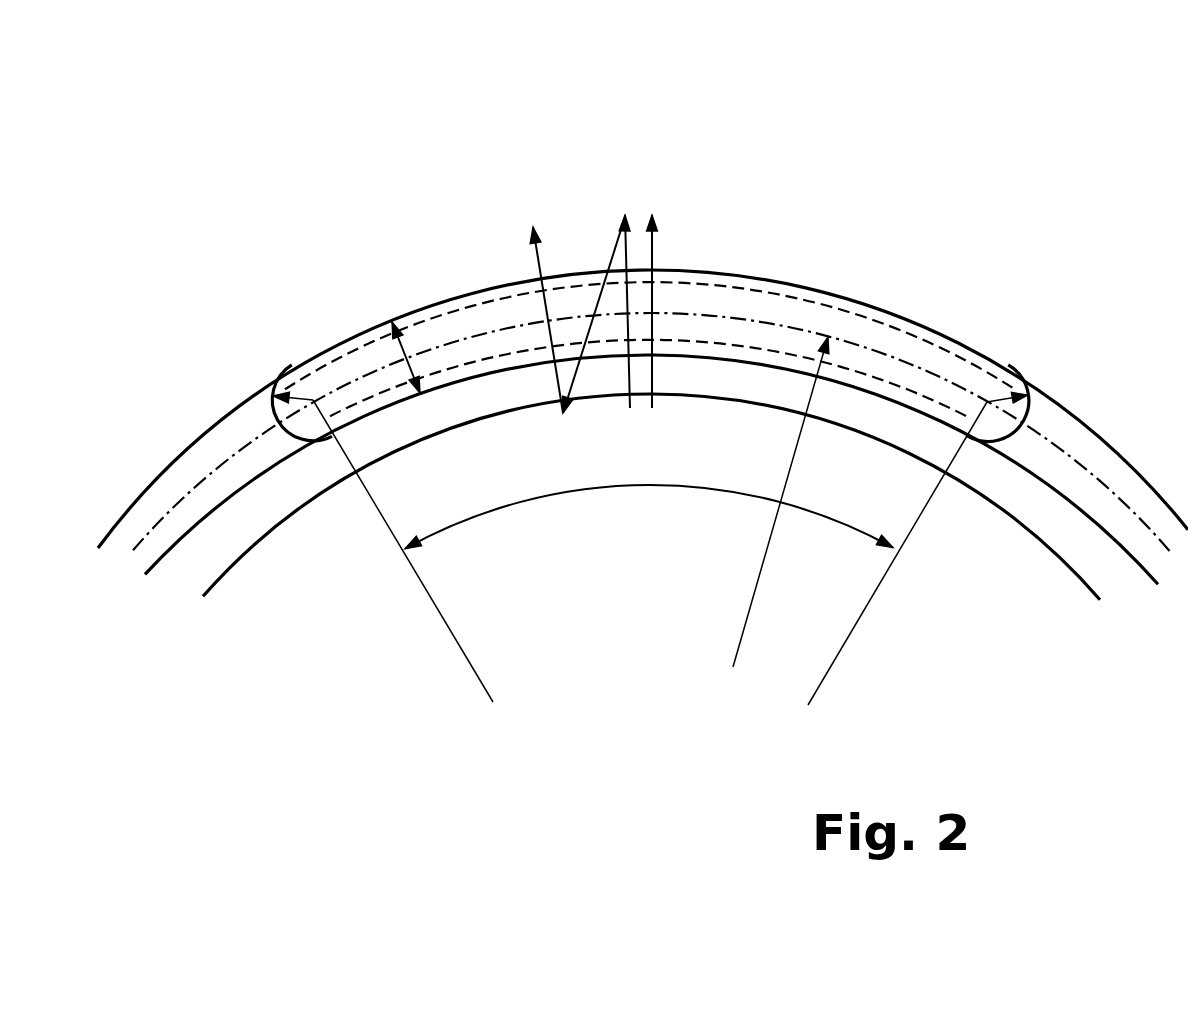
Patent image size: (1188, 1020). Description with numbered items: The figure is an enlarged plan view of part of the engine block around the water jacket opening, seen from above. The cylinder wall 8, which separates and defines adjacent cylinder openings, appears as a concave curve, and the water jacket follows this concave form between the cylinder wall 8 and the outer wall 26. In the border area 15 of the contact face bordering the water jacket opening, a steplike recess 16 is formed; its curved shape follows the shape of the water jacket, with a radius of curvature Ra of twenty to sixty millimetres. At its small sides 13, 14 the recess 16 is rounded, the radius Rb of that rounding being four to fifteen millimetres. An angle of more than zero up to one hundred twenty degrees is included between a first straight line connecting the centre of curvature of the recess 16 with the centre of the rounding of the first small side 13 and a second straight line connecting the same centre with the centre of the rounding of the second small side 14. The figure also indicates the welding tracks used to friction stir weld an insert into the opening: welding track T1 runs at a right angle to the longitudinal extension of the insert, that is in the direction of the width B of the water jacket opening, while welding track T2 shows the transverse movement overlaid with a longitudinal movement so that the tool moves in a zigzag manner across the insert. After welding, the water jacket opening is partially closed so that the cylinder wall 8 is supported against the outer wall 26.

The outer wall 26 is at (617, 89).
The border area 15 is at (1013, 304).
The recess 16 is at (808, 302).
The first small side 13 is at (280, 422).
The second small side 14 is at (1027, 428).
The cylinder wall 8 is at (246, 522).
The welding track T1 is at (652, 246).
The welding track T2 is at (533, 260).
The width of the water jacket opening B is at (398, 355).
The radius of the curvature of the recesses Ra is at (457, 643).
The radius of the rounding of the small sides Rb is at (313, 400).